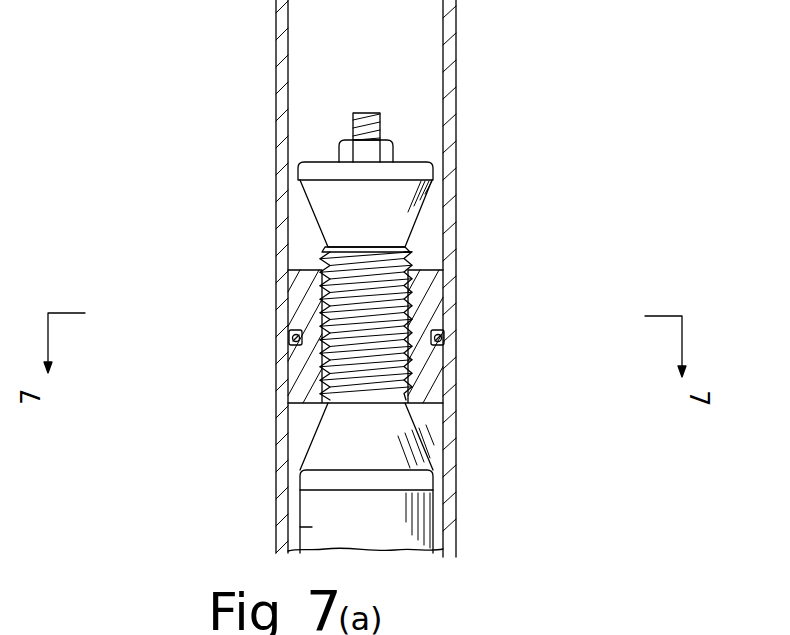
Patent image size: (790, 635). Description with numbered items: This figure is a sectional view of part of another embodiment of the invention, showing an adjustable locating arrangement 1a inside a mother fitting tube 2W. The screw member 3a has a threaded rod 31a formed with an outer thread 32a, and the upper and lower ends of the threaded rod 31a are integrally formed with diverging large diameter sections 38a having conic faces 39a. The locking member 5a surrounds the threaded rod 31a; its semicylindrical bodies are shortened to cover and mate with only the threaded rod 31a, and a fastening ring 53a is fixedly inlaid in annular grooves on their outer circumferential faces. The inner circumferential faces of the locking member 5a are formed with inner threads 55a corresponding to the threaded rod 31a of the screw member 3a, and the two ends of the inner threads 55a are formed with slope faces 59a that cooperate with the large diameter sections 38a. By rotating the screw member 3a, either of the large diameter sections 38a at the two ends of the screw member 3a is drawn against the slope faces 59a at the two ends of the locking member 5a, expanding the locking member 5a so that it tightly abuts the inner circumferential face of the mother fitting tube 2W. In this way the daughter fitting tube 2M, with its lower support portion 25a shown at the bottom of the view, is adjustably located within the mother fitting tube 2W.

The mother fitting tube 2W is at (450, 52).
The clamping device 1a is at (484, 110).
The screw member 3a is at (383, 276).
The large diameter section 38a is at (318, 197).
The conic face 39a is at (320, 237).
The threaded rod 31a is at (425, 261).
The outer thread 32a is at (428, 297).
The inner thread 55a is at (383, 315).
The fastening ring 53a is at (444, 338).
The locking member 5a is at (464, 338).
The slope face 59a is at (393, 413).
The daughter fitting tube 2M is at (413, 518).
The support portion 25a is at (312, 527).